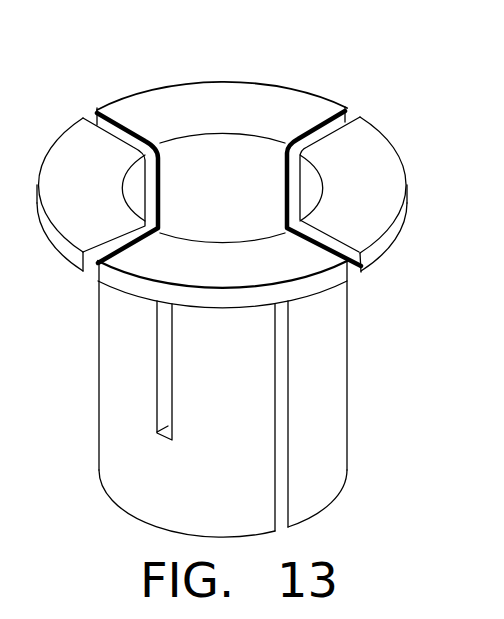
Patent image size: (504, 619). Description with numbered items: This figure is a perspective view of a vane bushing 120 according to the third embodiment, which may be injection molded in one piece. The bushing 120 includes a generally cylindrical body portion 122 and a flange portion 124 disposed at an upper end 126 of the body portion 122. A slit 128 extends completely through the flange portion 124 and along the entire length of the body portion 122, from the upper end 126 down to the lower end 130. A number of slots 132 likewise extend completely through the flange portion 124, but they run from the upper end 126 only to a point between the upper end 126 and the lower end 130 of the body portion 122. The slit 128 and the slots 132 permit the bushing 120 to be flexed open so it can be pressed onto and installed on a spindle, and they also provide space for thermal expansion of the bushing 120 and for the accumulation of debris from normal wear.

The bushing 120 is at (334, 76).
The body portion 122 is at (348, 393).
The flange portion 124 is at (398, 174).
The upper end 126 is at (188, 138).
The slit 128 is at (276, 444).
The lower end 130 is at (336, 492).
The slots 132 is at (318, 126).